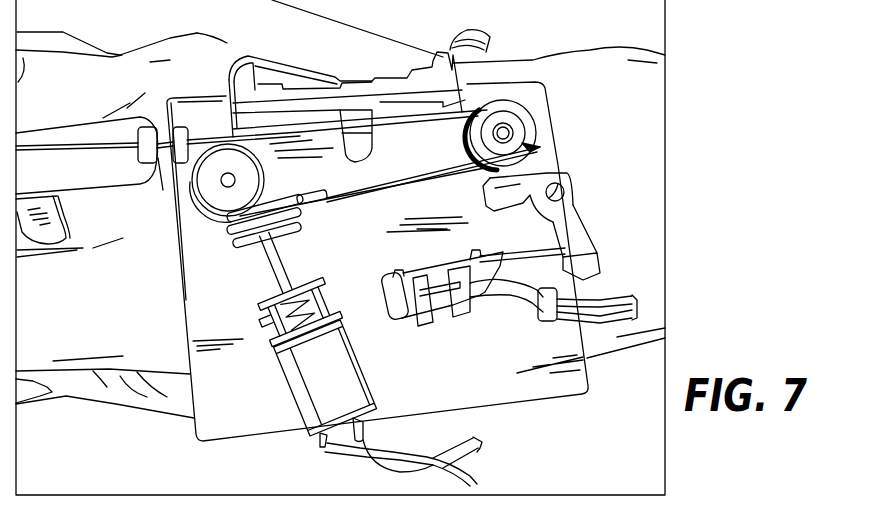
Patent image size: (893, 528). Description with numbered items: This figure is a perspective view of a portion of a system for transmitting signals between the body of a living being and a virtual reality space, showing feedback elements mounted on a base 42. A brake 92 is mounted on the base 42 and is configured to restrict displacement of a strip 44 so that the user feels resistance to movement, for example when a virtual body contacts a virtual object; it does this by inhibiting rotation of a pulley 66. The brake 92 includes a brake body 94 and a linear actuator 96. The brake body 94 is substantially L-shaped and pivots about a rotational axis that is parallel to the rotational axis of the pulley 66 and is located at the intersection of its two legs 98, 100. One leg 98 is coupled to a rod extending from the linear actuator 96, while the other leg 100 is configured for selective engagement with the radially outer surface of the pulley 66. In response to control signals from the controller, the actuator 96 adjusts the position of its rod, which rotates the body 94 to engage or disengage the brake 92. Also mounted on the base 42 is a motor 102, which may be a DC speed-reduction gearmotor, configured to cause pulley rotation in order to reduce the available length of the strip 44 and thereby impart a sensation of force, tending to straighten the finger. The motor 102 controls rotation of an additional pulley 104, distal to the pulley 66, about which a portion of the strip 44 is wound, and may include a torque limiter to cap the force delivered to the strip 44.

The base 42 is at (207, 318).
The strip 44 is at (222, 133).
The pulley 66 is at (505, 101).
The brake 92 is at (563, 136).
The brake body 94 is at (572, 203).
The linear actuator 96 is at (437, 305).
The leg 98 is at (572, 224).
The leg 100 is at (537, 183).
The motor 102 is at (320, 373).
The additional pulley 104 is at (234, 231).